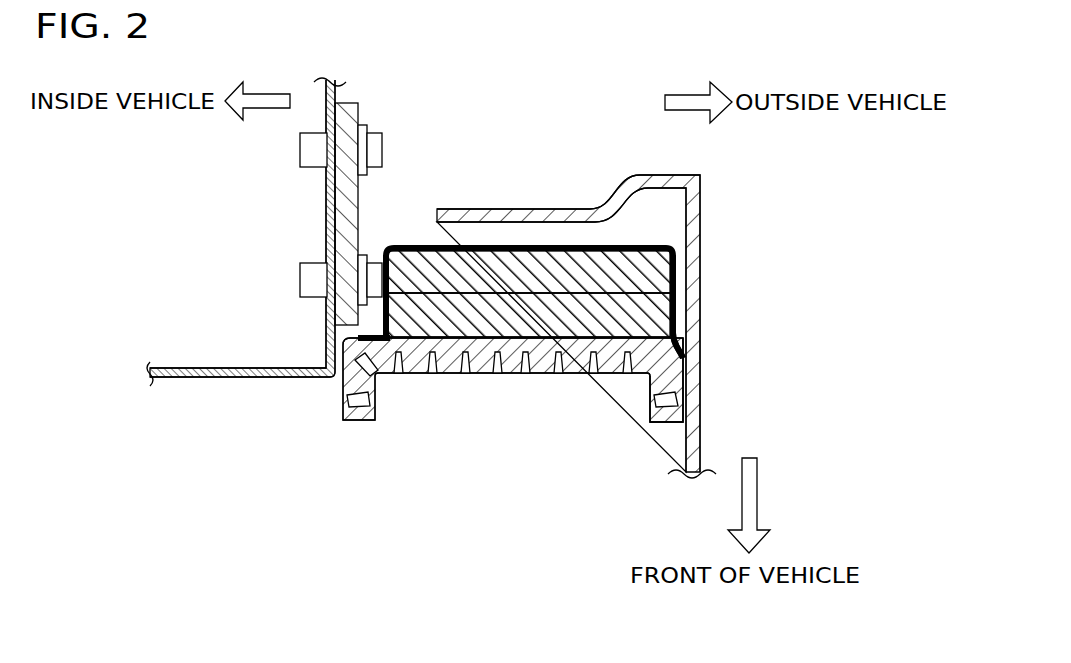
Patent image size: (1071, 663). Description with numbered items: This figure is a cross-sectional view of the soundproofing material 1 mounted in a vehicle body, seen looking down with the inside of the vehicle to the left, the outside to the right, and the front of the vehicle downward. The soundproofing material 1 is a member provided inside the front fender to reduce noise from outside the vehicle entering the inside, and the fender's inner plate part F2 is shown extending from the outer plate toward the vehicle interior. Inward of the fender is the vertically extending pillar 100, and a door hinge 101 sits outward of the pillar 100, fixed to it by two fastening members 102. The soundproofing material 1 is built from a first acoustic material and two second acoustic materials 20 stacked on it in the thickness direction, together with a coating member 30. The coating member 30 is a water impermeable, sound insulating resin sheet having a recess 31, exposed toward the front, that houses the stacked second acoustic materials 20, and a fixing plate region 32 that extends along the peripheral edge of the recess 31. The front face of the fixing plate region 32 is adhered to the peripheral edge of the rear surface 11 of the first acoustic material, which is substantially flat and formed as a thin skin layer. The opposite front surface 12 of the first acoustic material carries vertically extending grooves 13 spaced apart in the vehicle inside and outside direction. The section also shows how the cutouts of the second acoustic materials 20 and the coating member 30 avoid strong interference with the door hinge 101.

The soundproofing material 1 is at (412, 377).
The rear surface 11 is at (643, 322).
The front surface 12 is at (607, 377).
The grooves 13 is at (557, 352).
The second sheet-like acoustic material 20 is at (650, 273).
The coating member 30 is at (642, 237).
The recess 31 is at (583, 247).
The fixing plate region 32 is at (677, 330).
The pillar 100 is at (225, 377).
The door hinge 101 is at (358, 192).
The fastening member 102 is at (372, 126).
The inner plate part F2 is at (537, 208).